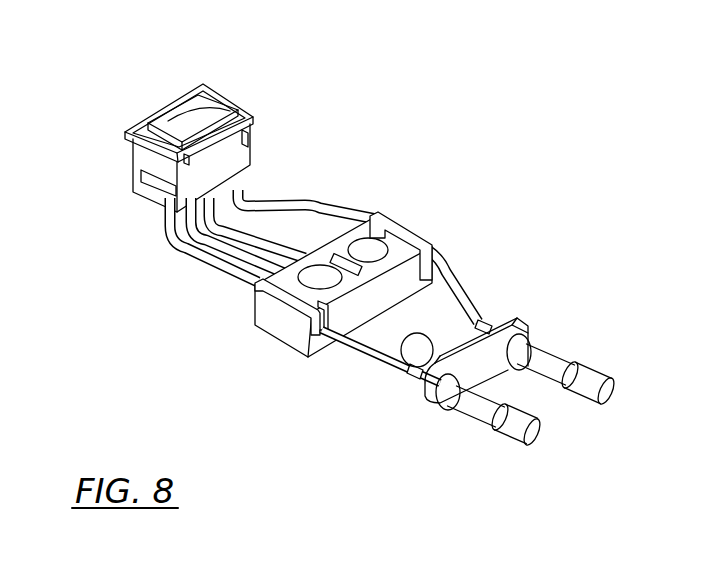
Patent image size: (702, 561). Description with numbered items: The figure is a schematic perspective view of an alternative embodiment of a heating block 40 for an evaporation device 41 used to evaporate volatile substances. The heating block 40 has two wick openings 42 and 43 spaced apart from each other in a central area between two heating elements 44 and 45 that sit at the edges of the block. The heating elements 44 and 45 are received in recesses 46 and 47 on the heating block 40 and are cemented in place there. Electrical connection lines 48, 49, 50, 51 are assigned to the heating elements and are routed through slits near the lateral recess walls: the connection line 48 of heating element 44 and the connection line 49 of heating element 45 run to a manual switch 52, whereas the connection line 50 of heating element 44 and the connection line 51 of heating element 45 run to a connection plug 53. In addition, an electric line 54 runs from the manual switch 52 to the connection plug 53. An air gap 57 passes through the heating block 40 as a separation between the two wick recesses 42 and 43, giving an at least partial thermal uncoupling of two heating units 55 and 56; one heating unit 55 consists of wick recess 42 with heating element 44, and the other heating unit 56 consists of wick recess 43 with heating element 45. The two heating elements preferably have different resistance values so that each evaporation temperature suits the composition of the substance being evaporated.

The heating block 40 is at (363, 301).
The evaporation device 41 is at (442, 188).
The wick opening 42 is at (418, 230).
The wick opening 43 is at (312, 303).
The heating element 44 is at (270, 292).
The heating element 45 is at (432, 243).
The recess 46 is at (318, 280).
The recess 47 is at (386, 210).
The connection line 48 is at (167, 247).
The connection line 49 is at (215, 221).
The connection line 50 is at (390, 360).
The connection line 51 is at (423, 368).
The manual switch 52 is at (185, 114).
The connection plug 53 is at (491, 364).
The electric line 54 is at (313, 205).
The heating unit 55 is at (332, 299).
The heating unit 56 is at (358, 236).
The air gap 57 is at (345, 265).